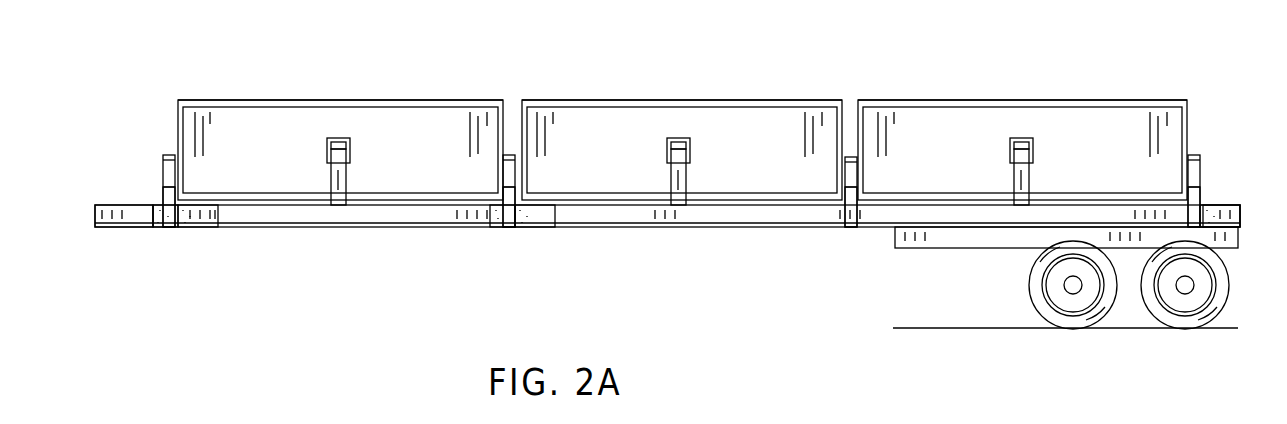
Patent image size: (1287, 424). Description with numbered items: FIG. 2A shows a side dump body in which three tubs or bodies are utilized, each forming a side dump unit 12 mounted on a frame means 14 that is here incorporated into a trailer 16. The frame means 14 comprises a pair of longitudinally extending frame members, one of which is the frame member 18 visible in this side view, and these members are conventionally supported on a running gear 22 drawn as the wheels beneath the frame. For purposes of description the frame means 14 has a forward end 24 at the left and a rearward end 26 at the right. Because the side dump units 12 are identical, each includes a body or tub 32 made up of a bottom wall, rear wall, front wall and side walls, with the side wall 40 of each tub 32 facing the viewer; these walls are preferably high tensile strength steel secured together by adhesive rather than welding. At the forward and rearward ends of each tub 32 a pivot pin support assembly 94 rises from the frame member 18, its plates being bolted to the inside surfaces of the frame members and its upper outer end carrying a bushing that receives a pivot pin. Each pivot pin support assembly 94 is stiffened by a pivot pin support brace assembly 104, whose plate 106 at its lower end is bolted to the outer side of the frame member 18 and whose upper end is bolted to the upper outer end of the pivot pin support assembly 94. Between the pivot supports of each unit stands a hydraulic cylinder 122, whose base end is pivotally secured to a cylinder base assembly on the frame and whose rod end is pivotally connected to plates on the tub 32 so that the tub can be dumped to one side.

The side dump unit 12 is at (405, 96).
The frame means 14 is at (482, 236).
The trailer 16 is at (122, 203).
The frame member 18 is at (701, 232).
The running gear 22 is at (1025, 296).
The forward end 24 is at (85, 216).
The rearward end 26 is at (1243, 216).
The body or tub 32 is at (283, 97).
The side wall 40 is at (270, 158).
The pivot pin support assembly 94 is at (168, 152).
The pivot pin support brace assembly 104 is at (165, 197).
The plate 106 is at (190, 226).
The hydraulic cylinder 122 is at (343, 182).